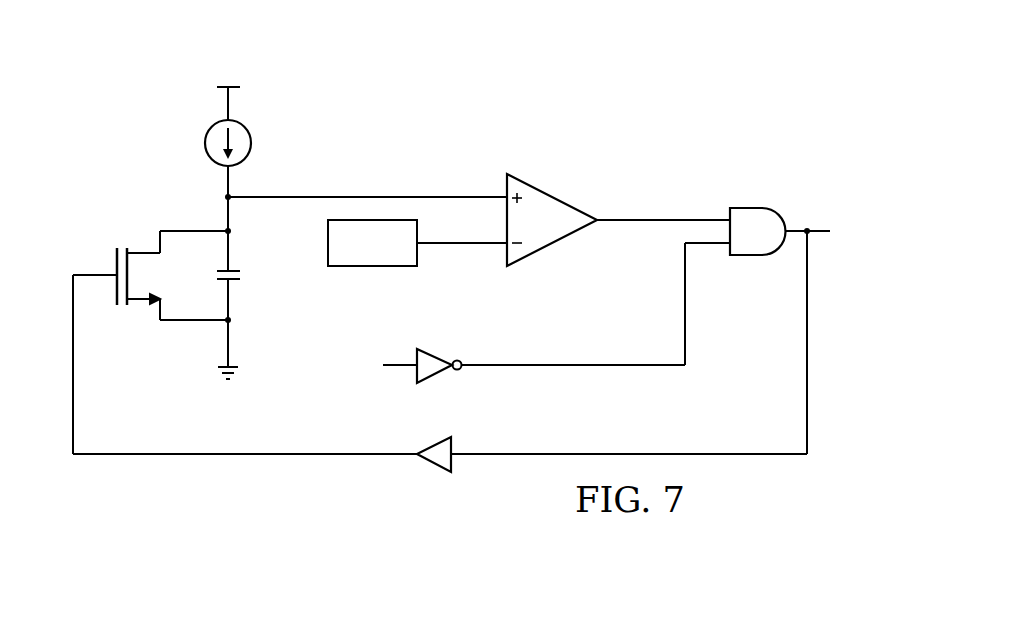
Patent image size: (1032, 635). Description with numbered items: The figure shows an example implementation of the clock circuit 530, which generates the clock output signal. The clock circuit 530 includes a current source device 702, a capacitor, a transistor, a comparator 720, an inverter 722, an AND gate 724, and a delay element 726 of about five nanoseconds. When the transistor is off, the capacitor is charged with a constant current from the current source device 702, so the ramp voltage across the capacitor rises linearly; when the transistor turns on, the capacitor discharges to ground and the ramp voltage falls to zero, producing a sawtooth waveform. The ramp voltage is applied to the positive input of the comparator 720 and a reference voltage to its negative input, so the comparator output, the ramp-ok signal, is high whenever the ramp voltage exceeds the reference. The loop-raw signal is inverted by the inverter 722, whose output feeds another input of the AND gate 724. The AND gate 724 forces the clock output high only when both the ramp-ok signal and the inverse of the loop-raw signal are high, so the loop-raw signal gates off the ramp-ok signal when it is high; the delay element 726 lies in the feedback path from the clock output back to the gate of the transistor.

The clock circuit 530 is at (658, 62).
The current source device 702 is at (207, 141).
The comparator 720 is at (553, 194).
The inverter 722 is at (438, 376).
The AND gate 724 is at (753, 207).
The delay element 726 is at (433, 466).